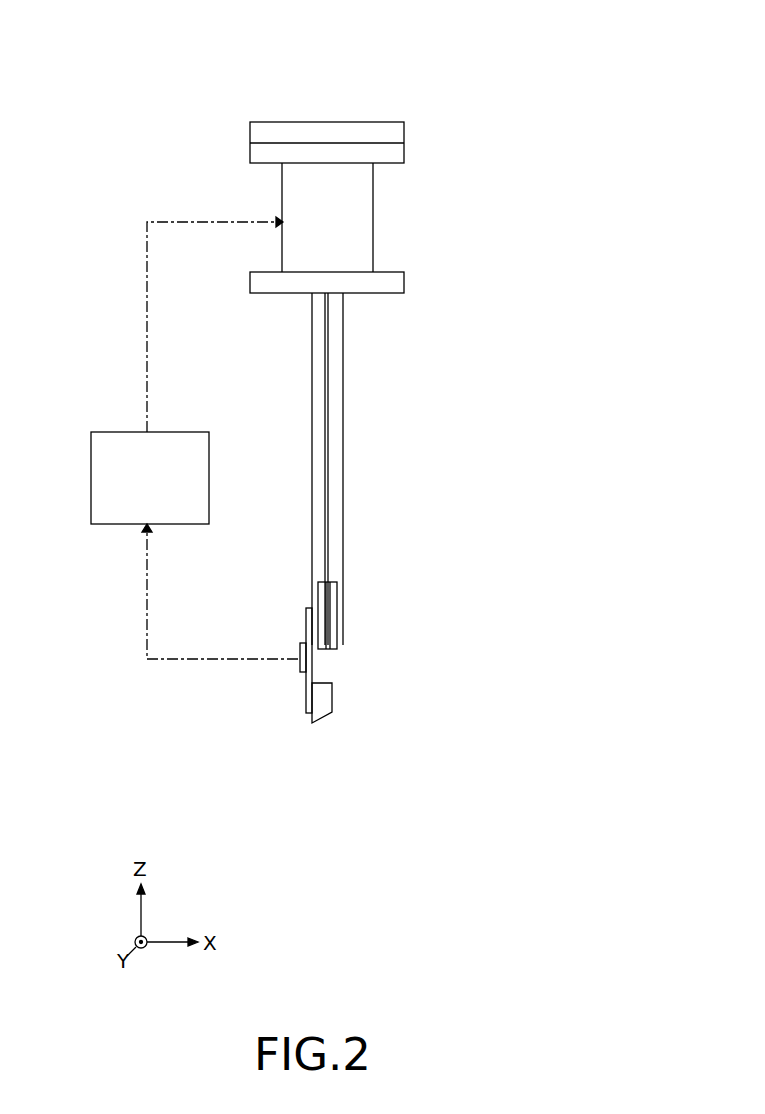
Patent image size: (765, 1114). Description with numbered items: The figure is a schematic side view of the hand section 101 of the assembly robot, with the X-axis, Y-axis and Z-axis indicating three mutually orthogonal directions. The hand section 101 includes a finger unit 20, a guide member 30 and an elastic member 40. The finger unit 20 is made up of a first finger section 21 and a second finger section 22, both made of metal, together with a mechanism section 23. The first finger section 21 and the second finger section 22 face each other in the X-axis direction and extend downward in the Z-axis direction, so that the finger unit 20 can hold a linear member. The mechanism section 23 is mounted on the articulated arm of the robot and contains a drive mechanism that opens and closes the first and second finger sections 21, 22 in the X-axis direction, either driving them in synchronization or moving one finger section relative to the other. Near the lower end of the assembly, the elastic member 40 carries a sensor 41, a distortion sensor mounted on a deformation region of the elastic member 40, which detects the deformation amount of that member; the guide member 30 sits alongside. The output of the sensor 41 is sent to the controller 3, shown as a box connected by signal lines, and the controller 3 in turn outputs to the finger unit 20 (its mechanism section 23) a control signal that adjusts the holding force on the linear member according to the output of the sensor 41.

The hand section 101 is at (374, 86).
The finger unit 20 is at (460, 203).
The mechanism section 23 is at (358, 218).
The first finger section 21 is at (318, 344).
The second finger section 22 is at (336, 392).
The elastic member 40 is at (306, 699).
The sensor 41 is at (300, 652).
The guide member 30 is at (332, 697).
The controller 3 is at (94, 483).